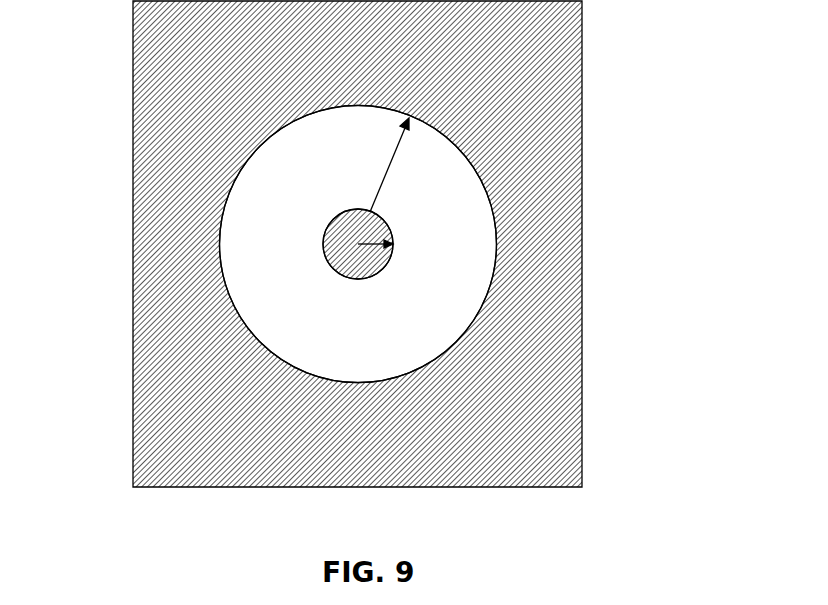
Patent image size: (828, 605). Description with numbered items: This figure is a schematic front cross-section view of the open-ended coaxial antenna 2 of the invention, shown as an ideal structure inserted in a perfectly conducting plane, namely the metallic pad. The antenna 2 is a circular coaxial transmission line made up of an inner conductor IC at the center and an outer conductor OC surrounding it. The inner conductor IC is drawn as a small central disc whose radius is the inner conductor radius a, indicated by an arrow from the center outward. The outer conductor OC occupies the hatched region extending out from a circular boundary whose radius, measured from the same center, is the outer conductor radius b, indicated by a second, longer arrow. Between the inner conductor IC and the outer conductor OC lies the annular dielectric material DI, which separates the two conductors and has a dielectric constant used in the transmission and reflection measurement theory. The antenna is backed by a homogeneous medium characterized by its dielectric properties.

The optical fiber 2 is at (373, 244).
The outer conductor OC is at (572, 423).
The dielectric material DI is at (452, 182).
The inner conductor IC is at (363, 275).
The inner conductor radius a is at (388, 250).
The outer conductor radius b is at (382, 165).